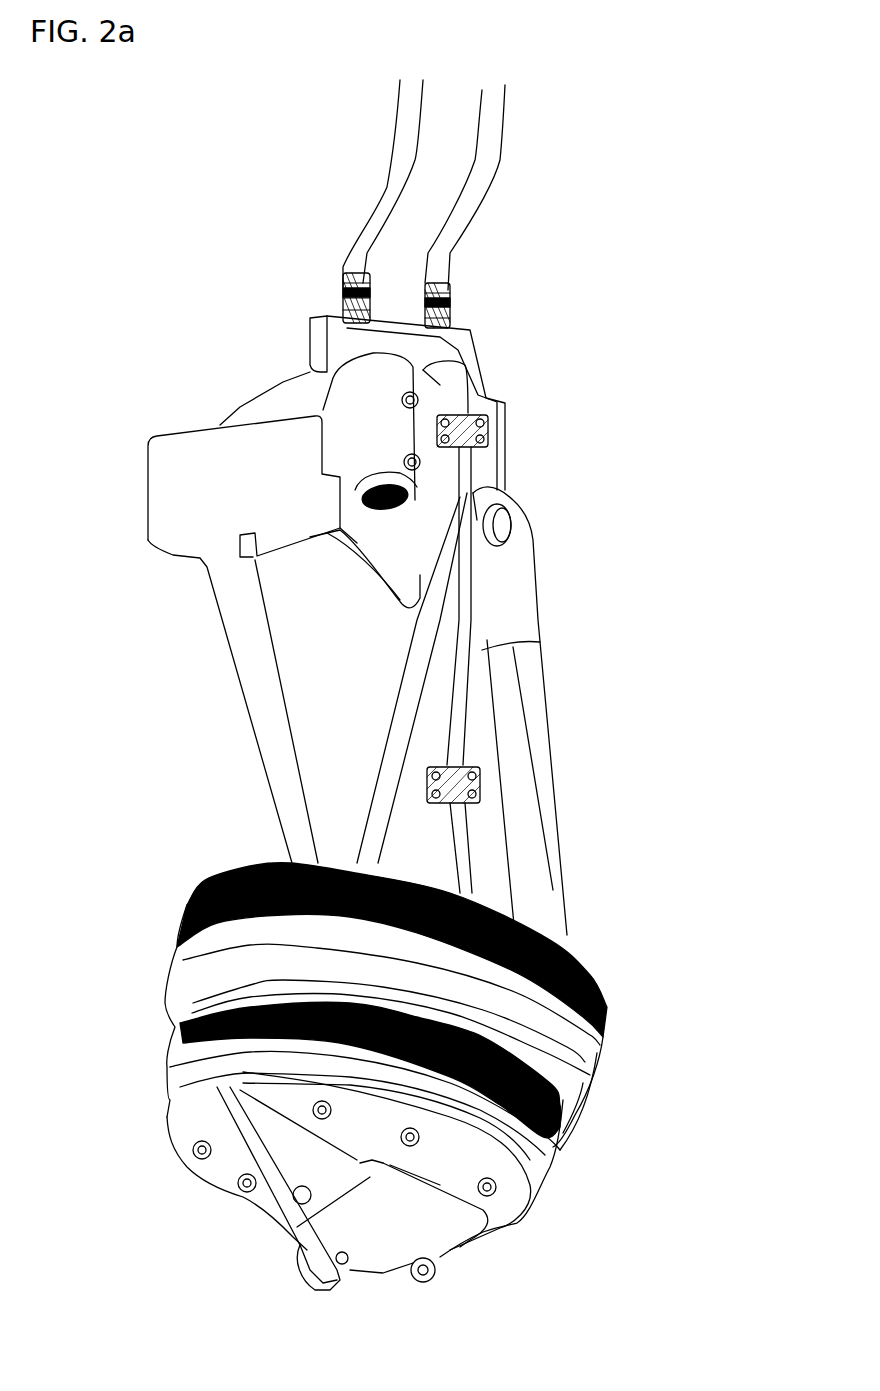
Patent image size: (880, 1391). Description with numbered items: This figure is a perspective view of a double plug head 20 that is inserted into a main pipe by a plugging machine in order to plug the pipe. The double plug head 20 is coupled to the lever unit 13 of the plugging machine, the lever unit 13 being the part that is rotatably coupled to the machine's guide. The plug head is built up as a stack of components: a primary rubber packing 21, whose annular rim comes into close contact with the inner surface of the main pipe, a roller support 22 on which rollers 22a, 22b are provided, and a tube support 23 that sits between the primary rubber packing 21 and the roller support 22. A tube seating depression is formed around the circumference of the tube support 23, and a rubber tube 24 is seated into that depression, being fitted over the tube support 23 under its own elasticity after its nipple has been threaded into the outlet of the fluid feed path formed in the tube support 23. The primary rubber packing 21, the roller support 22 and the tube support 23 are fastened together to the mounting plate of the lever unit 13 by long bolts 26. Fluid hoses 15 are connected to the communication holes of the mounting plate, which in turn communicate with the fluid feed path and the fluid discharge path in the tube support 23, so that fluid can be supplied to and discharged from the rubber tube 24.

The lever unit 13 is at (525, 607).
The fluid hoses 15 is at (470, 651).
The double plug head 20 is at (157, 957).
The primary rubber packing 21 is at (597, 983).
The roller support 22 is at (523, 1227).
The roller 22a is at (313, 1287).
The roller 22b is at (437, 1283).
The tube support 23 is at (600, 1047).
The rubber tube 24 is at (553, 1140).
The long bolts 26 is at (203, 1183).